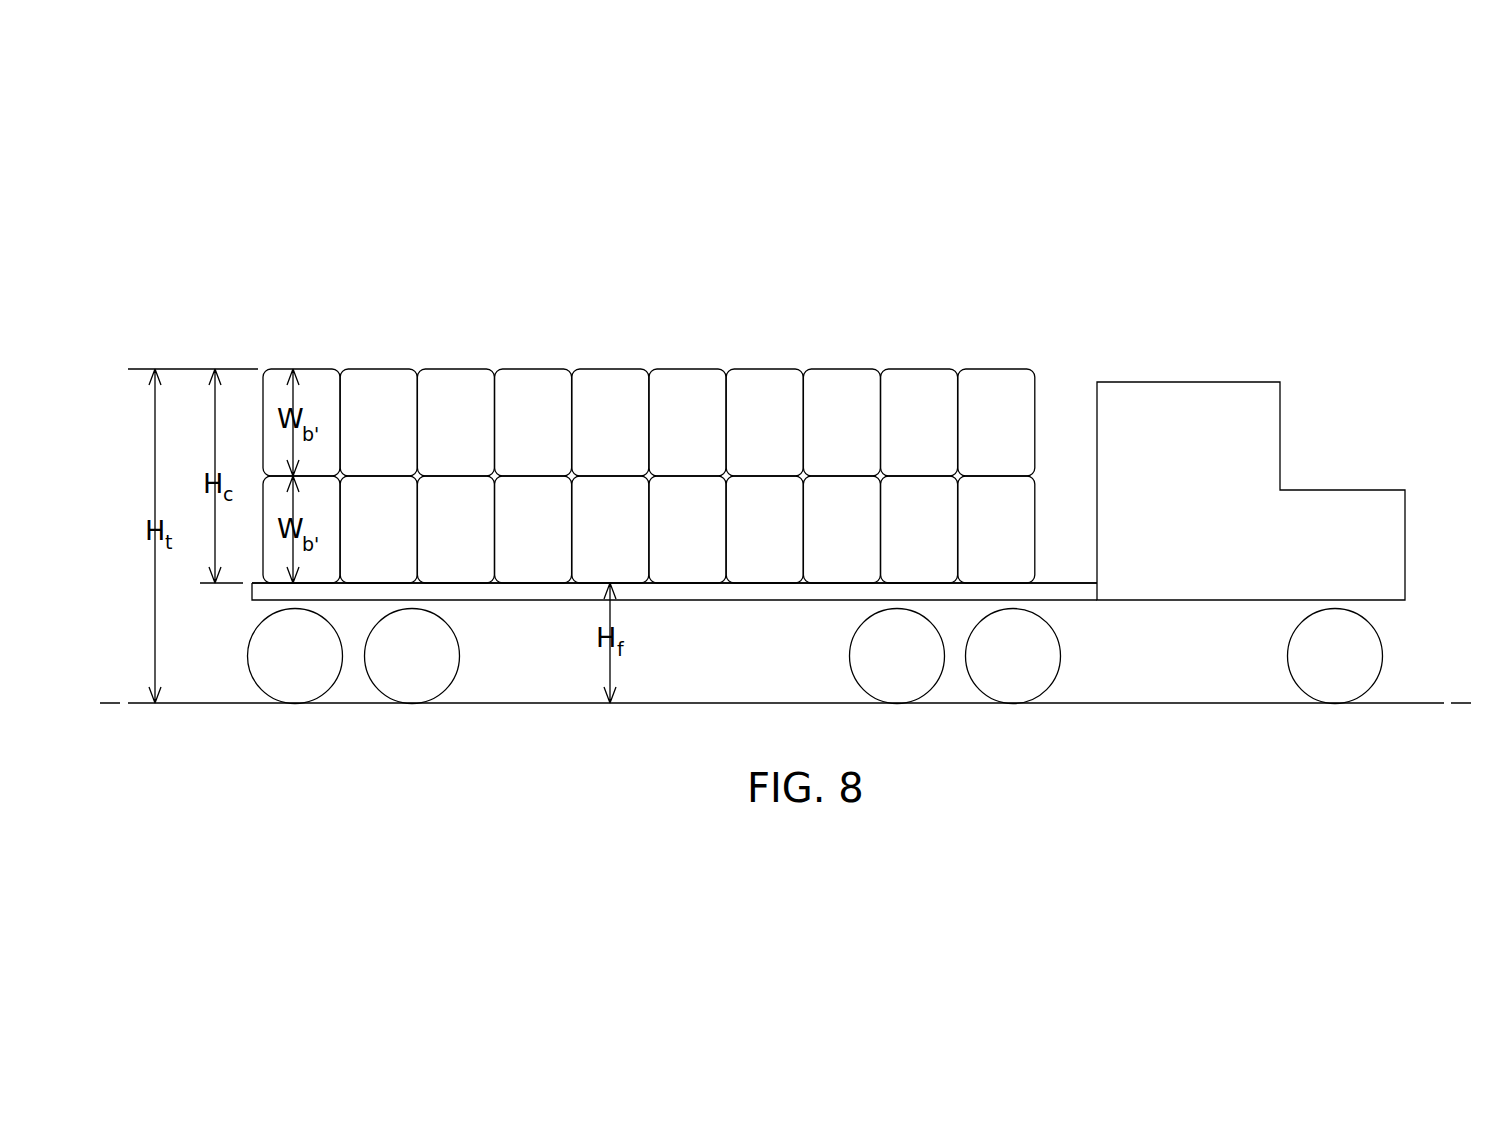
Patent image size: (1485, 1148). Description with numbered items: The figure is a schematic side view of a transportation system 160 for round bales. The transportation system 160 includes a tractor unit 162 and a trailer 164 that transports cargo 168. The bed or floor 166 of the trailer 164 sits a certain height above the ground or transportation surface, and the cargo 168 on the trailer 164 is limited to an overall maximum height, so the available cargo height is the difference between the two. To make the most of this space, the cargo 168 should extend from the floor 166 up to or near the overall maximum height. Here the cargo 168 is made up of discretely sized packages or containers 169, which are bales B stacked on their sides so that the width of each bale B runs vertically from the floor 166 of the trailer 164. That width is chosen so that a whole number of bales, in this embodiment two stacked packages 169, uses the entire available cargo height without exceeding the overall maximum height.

The transportation system 160 is at (827, 452).
The tractor unit 162 is at (1228, 408).
The trailer 164 is at (762, 599).
The bed or floor of the trailer 166 is at (673, 583).
The cargo 168 is at (649, 399).
The packages or containers 169 is at (752, 388).
The bale B is at (466, 393).